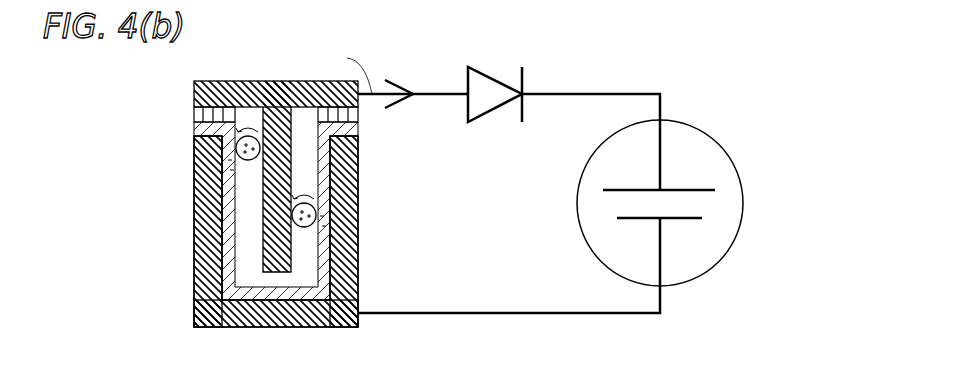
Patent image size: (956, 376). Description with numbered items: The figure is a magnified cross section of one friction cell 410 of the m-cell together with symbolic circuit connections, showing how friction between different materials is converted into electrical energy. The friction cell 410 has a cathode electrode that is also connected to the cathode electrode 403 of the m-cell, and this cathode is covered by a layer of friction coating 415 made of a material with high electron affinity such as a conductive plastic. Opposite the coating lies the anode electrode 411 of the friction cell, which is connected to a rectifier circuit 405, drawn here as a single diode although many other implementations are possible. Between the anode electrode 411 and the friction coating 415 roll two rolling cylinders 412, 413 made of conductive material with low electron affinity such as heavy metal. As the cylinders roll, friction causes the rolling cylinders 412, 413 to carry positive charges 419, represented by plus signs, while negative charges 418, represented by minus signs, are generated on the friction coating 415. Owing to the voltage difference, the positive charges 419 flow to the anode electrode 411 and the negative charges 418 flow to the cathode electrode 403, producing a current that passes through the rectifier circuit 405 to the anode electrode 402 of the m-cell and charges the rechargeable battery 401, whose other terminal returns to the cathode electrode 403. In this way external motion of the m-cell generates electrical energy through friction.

The rechargeable battery 401 is at (688, 168).
The anode electrode of the m-cell 402 is at (655, 92).
The cathode electrode of the m-cell 403 is at (270, 251).
The rectifier circuit 405 is at (478, 87).
The friction cell 410 is at (249, 116).
The anode electrode of the friction cell 411 is at (193, 100).
The rolling cylinder 412 is at (195, 178).
The rolling cylinder 413 is at (340, 232).
The friction coating 415 is at (217, 308).
The negative charges 418 is at (226, 250).
The positive charges 419 is at (293, 100).